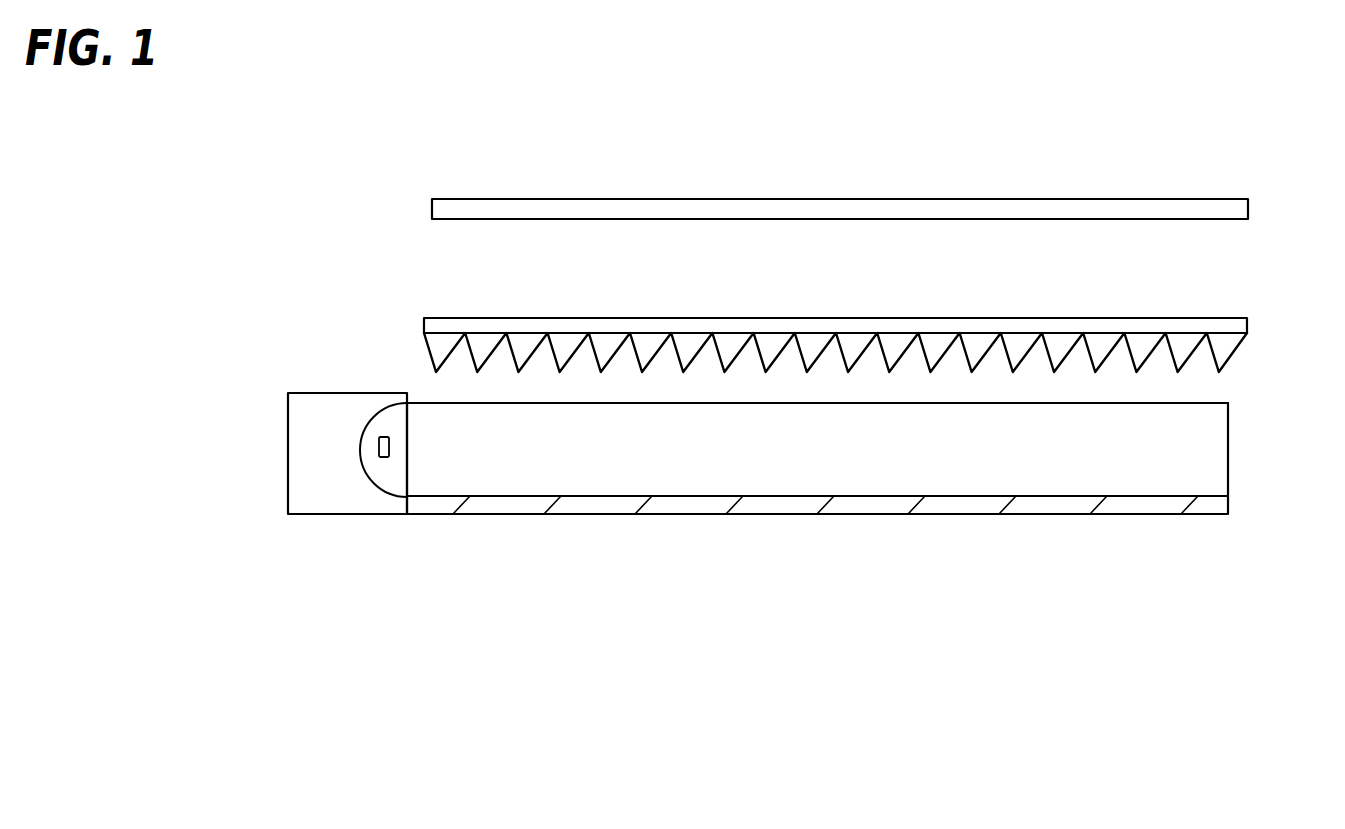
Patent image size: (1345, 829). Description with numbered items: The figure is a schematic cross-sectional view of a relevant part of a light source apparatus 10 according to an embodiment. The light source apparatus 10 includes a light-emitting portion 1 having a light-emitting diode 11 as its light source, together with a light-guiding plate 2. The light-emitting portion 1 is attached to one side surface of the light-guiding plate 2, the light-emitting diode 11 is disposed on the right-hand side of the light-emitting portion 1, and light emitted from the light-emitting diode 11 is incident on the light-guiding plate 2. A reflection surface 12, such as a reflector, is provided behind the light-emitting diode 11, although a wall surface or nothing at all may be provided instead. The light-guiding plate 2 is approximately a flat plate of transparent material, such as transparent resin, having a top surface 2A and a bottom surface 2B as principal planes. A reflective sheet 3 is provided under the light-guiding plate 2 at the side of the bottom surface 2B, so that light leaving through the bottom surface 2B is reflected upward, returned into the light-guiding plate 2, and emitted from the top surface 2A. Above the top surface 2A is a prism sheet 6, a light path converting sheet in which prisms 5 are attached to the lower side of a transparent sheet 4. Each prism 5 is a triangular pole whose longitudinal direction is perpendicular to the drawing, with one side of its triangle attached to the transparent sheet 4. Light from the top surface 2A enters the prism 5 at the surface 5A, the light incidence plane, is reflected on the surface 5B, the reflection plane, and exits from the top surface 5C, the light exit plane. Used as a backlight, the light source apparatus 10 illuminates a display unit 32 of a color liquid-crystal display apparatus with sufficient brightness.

The light source apparatus 10 is at (900, 673).
The display unit 32 is at (808, 208).
The prism sheet 6 is at (877, 320).
The transparent sheet 4 is at (1231, 325).
The prism 5 is at (488, 340).
The surface of one side of the prism 5A is at (1160, 354).
The surface of another side of the prism 5B is at (1198, 356).
The top surface of the prism 5C is at (1179, 348).
The light-emitting portion 1 is at (310, 492).
The light-emitting diode 11 is at (381, 458).
The reflection surface 12 is at (373, 404).
The light-guiding plate 2 is at (949, 468).
The top surface 2A is at (1063, 412).
The bottom surface 2B is at (1096, 487).
The reflective sheet 3 is at (857, 507).